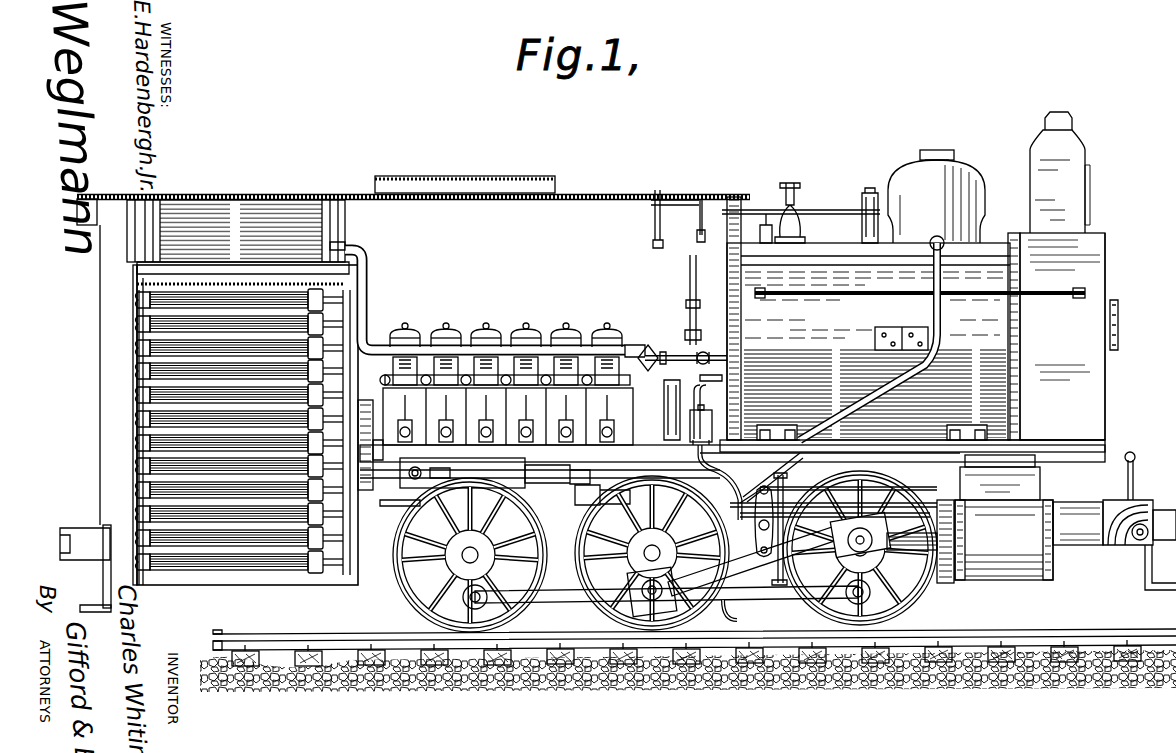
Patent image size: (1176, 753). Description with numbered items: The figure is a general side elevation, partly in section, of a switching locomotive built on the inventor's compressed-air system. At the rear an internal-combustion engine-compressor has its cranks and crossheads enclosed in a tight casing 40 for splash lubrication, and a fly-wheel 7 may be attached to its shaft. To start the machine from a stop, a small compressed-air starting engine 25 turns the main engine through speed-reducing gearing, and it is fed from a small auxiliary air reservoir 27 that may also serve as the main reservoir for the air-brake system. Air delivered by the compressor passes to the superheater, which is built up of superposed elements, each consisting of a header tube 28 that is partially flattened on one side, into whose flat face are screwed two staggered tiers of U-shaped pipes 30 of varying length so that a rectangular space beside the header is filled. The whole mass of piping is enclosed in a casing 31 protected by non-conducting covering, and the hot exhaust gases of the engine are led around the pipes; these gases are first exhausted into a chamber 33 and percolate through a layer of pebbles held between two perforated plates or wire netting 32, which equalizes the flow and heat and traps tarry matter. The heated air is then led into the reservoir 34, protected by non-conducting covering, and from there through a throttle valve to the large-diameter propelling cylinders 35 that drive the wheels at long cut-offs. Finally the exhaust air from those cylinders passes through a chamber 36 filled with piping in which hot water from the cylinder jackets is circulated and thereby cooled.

The fly-wheel 7 is at (373, 420).
The starting engine 25 is at (708, 440).
The auxiliary air reservoir 27 is at (495, 473).
The tube 28 is at (323, 368).
The pipes 30 is at (165, 366).
The casing 31 is at (135, 407).
The perforated plates 32 is at (135, 295).
The chamber 33 is at (247, 421).
The reservoir 34 is at (903, 295).
The propelling cylinders 35 is at (1029, 517).
The chamber 36 is at (1063, 276).
The casing 40 is at (506, 384).